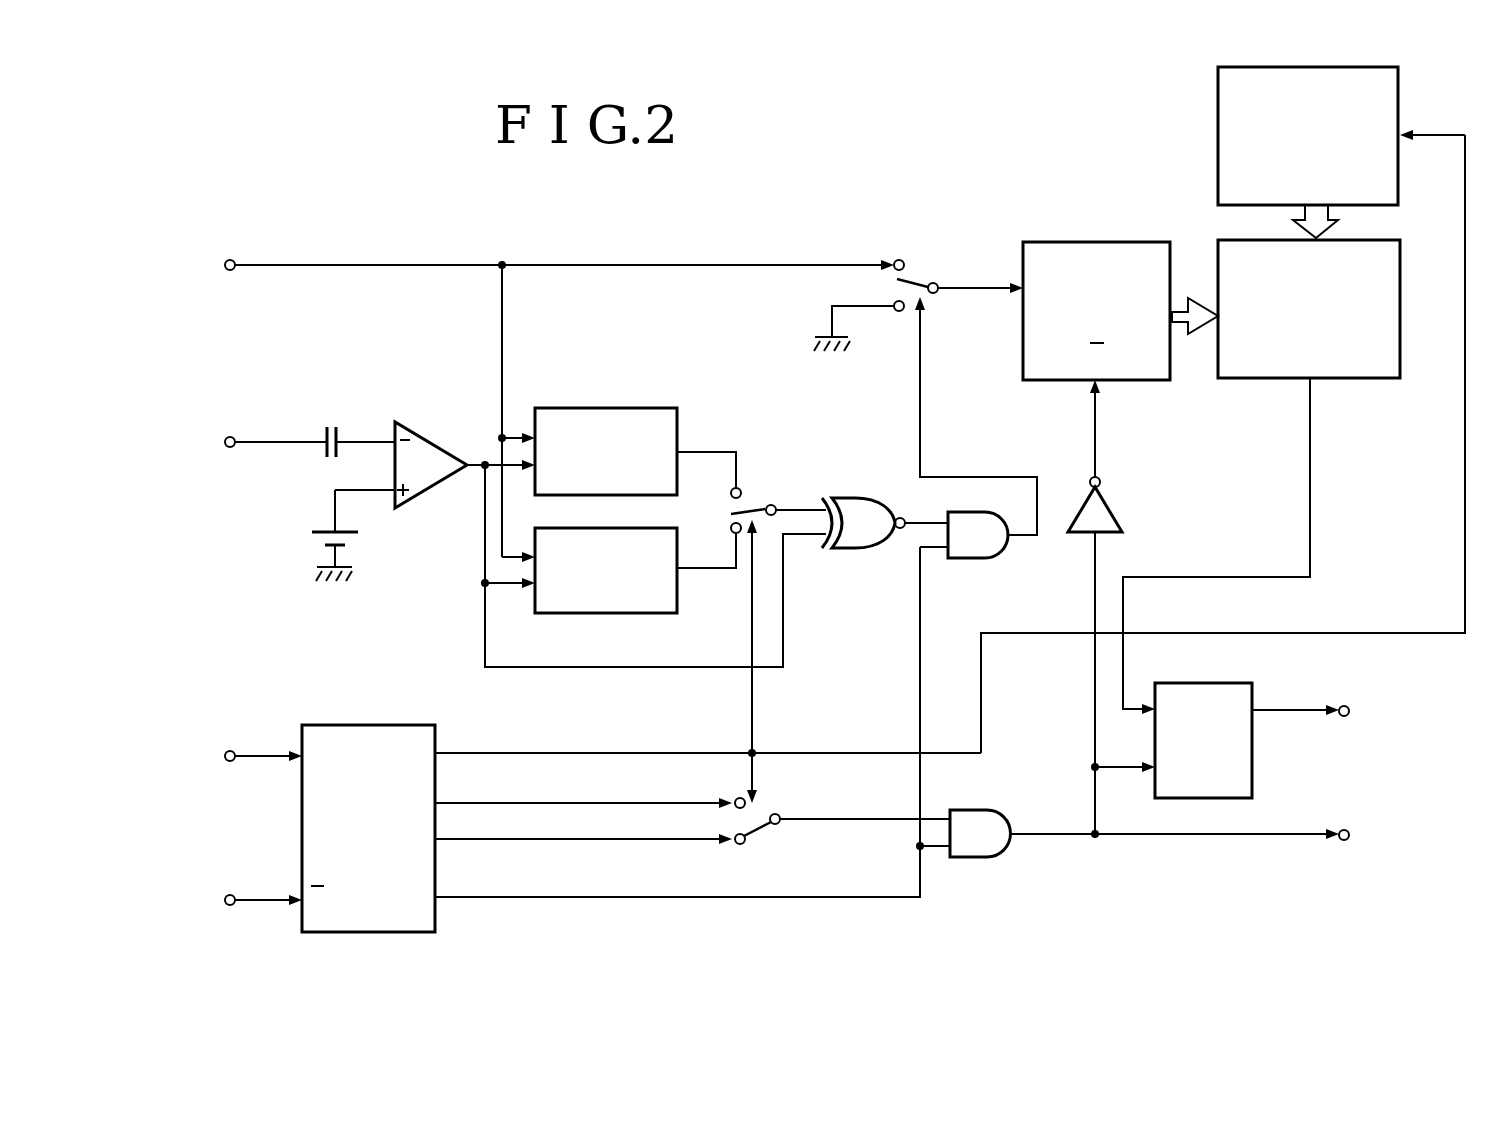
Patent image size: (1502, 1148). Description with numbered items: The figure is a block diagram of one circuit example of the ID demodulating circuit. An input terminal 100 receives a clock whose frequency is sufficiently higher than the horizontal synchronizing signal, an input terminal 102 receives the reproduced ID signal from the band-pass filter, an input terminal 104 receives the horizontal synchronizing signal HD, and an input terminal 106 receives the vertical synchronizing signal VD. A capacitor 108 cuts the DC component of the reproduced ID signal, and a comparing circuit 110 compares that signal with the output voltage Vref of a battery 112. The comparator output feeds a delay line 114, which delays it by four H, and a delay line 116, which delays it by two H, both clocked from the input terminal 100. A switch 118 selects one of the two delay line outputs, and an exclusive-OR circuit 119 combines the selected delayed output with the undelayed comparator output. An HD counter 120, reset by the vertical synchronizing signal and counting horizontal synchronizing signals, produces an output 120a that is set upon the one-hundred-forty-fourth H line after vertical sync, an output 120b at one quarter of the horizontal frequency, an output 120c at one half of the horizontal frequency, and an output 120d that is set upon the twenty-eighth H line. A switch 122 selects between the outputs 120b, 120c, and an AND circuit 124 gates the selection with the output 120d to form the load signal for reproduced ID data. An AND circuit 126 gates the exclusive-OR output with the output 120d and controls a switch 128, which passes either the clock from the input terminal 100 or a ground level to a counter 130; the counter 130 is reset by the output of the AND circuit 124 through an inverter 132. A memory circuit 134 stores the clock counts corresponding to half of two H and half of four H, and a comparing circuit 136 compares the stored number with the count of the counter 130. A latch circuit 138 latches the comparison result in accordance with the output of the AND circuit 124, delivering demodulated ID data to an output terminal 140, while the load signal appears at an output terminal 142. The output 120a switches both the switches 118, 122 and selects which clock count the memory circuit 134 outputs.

The input terminal 100 is at (231, 271).
The input terminal 102 is at (231, 448).
The input terminal 104 is at (232, 747).
The input terminal 106 is at (232, 892).
The capacitor 108 is at (333, 426).
The comparing circuit 110 is at (428, 438).
The battery 112 is at (345, 541).
The delay line 114 is at (677, 430).
The delay line 116 is at (677, 590).
The switch 118 is at (753, 498).
The exclusive-OR circuit 119 is at (860, 548).
The HD counter 120 is at (403, 725).
The output 120a is at (515, 753).
The output 120b is at (515, 803).
The output 120c is at (515, 839).
The output 120d is at (515, 897).
The switch 122 is at (768, 833).
The AND circuit 124 is at (985, 857).
The AND circuit 126 is at (985, 558).
The switch 128 is at (918, 262).
The counter 130 is at (1034, 242).
The inverter 132 is at (1113, 507).
The memory circuit 134 is at (1218, 88).
The comparing circuit 136 is at (1363, 380).
The latch circuit 138 is at (1252, 688).
The output terminal 140 is at (1343, 717).
The output terminal 142 is at (1343, 841).